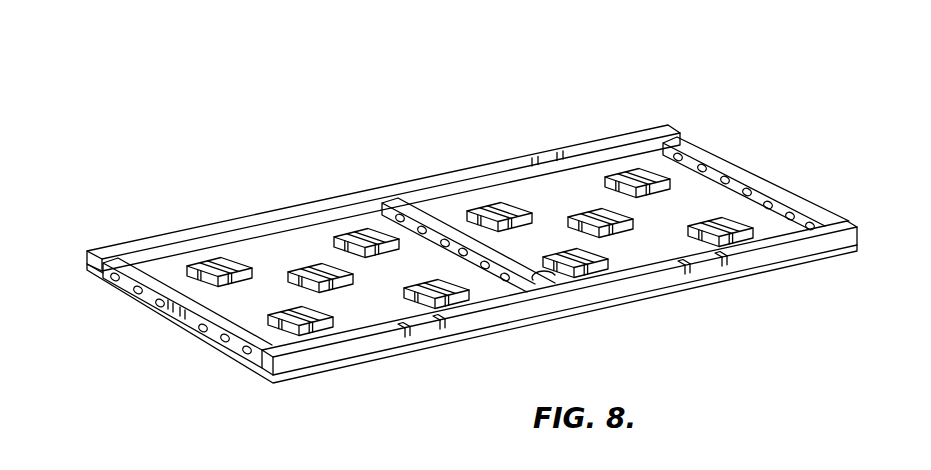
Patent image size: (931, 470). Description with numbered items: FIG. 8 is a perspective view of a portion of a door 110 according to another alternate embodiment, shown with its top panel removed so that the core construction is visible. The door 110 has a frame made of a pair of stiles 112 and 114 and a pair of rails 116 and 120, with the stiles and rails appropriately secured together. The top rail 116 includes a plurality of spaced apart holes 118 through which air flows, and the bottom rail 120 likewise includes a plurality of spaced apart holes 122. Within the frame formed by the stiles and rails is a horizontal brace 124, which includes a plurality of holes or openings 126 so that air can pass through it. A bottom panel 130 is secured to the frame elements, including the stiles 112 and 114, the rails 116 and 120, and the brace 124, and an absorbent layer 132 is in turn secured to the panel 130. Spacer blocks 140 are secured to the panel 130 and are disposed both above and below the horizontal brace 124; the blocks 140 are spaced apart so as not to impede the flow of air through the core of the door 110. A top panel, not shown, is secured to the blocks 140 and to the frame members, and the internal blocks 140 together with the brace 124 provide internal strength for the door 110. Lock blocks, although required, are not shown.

The door 110 is at (607, 103).
The stile 112 is at (665, 282).
The stile 114 is at (492, 165).
The top rail 116 is at (700, 157).
The holes 118 is at (767, 207).
The bottom rail 120 is at (213, 337).
The holes 122 is at (113, 278).
The horizontal brace 124 is at (542, 278).
The holes 126 is at (377, 207).
The bottom panel 130 is at (262, 250).
The absorbent layer 132 is at (398, 302).
The spacer blocks 140 is at (617, 175).